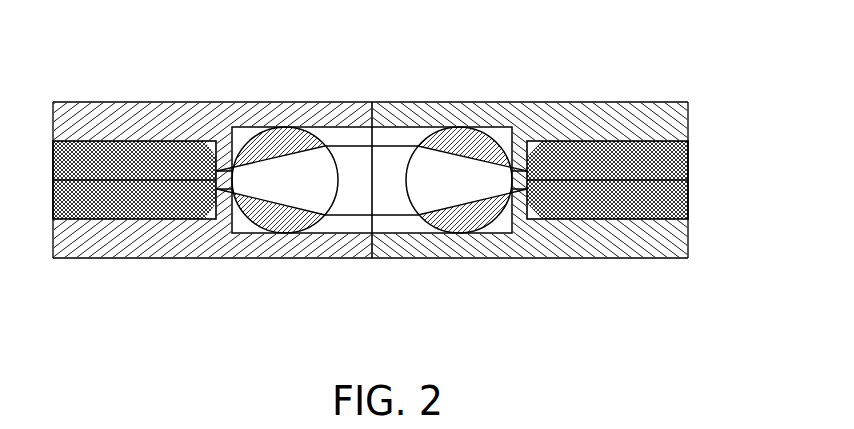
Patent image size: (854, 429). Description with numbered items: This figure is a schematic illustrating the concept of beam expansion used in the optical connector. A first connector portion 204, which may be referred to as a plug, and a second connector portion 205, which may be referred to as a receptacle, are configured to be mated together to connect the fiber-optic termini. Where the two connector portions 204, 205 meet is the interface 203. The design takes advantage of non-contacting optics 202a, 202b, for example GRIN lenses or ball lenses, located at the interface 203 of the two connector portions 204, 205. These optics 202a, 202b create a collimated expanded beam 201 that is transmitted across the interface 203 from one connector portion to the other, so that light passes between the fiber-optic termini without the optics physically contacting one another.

The collimated expanded beam 201 is at (388, 196).
The non-contacting optic 202a is at (278, 221).
The non-contacting optic 202b is at (462, 222).
The interface 203 is at (365, 118).
The first connector portion 204 is at (205, 118).
The second connector portion 205 is at (538, 123).